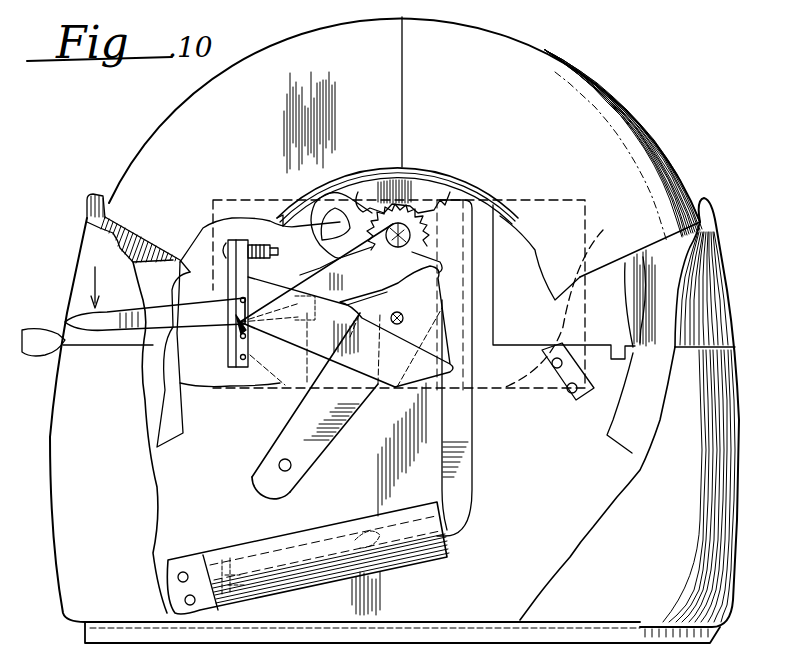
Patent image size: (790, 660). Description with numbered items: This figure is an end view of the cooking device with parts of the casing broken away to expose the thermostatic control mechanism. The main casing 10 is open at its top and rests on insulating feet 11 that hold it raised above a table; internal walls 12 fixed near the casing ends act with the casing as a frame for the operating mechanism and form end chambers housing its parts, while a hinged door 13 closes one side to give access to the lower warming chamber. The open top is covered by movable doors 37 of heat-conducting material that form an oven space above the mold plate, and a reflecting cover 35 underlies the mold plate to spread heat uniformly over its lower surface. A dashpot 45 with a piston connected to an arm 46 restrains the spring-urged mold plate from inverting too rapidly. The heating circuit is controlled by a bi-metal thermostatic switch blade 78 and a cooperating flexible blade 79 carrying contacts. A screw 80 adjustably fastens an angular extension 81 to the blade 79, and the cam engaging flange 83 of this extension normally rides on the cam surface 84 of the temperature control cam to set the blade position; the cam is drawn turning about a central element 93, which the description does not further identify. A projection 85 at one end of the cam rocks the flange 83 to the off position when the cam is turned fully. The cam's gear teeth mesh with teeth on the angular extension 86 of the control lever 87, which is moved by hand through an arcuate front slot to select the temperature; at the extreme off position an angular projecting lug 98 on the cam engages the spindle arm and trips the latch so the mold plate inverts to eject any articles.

The main casing 10 is at (740, 420).
The insulating feet 11 is at (90, 630).
The internal walls 12 is at (172, 484).
The hinged door 13 is at (52, 436).
The reflecting cover 35 is at (424, 300).
The movable doors 37 is at (191, 104).
The dashpot 45 is at (342, 528).
The arm 46 is at (470, 452).
The thermostatic switch blade 78 is at (227, 281).
The flexible blade 79 is at (250, 272).
The screw 80 is at (341, 397).
The angular extension 81 is at (313, 288).
The cam engaging flange 83 is at (371, 274).
The cam surface 84 is at (414, 236).
The projection 85 is at (398, 276).
The angular extension of control lever 86 is at (382, 195).
The control lever 87 is at (192, 318).
The shaft 93 is at (406, 243).
The angular projecting lug 98 is at (423, 200).